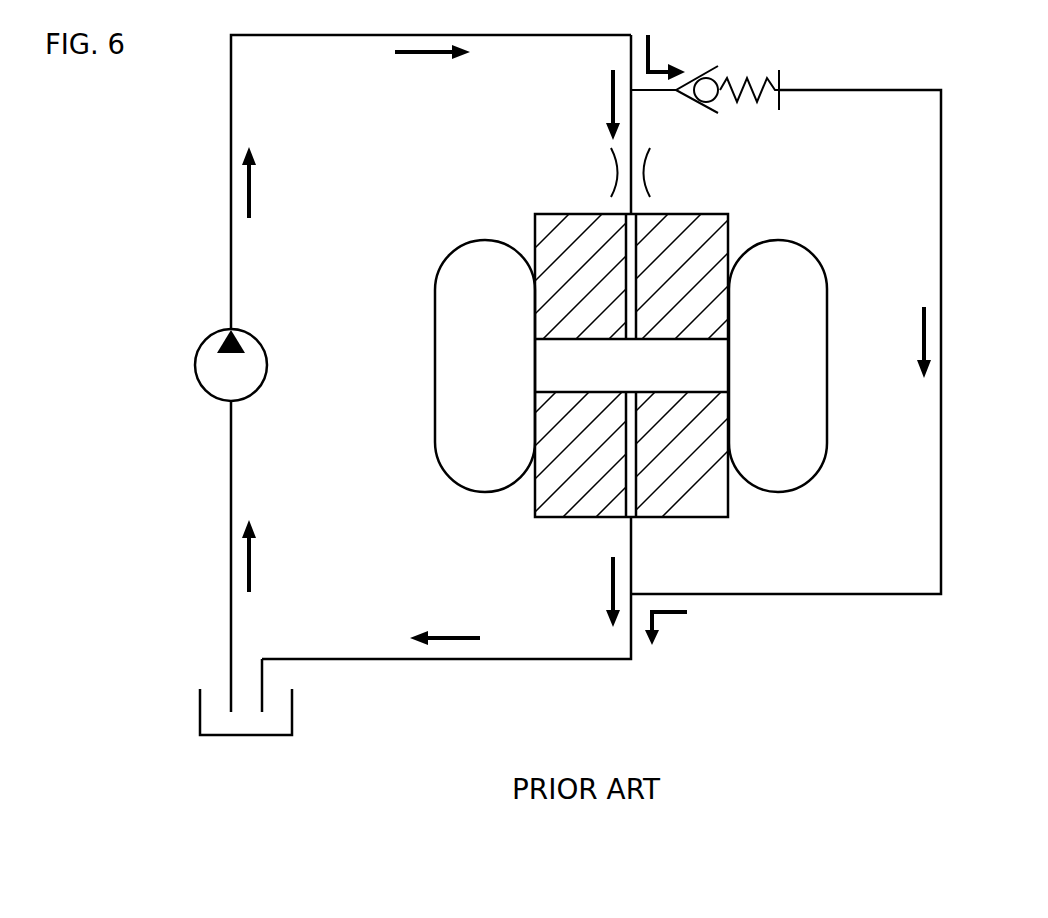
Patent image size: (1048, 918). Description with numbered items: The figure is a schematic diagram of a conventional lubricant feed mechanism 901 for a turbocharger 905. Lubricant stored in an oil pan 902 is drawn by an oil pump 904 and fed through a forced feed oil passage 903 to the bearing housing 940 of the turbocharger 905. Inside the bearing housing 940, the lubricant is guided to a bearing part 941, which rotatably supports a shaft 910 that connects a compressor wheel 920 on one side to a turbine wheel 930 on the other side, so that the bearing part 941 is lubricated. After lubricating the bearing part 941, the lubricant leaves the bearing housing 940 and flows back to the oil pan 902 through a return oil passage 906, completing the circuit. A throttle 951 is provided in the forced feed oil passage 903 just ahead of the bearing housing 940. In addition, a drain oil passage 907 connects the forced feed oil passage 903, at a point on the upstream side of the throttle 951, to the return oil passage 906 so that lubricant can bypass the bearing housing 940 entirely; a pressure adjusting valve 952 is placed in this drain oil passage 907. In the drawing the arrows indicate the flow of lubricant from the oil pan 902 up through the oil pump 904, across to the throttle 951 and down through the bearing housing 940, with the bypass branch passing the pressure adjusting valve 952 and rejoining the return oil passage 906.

The lubricant feed mechanism 901 is at (74, 103).
The oil pan 902 is at (200, 705).
The forced feed oil passage 903 is at (230, 114).
The oil pump 904 is at (197, 358).
The turbocharger 905 is at (763, 187).
The return oil passage 906 is at (520, 660).
The drain oil passage 907 is at (942, 302).
The shaft 910 is at (646, 379).
The compressor wheel 920 is at (487, 241).
The turbine wheel 930 is at (778, 241).
The bearing housing 940 is at (690, 214).
The bearing part 941 is at (690, 375).
The throttle 951 is at (603, 162).
The pressure adjusting valve 952 is at (745, 72).